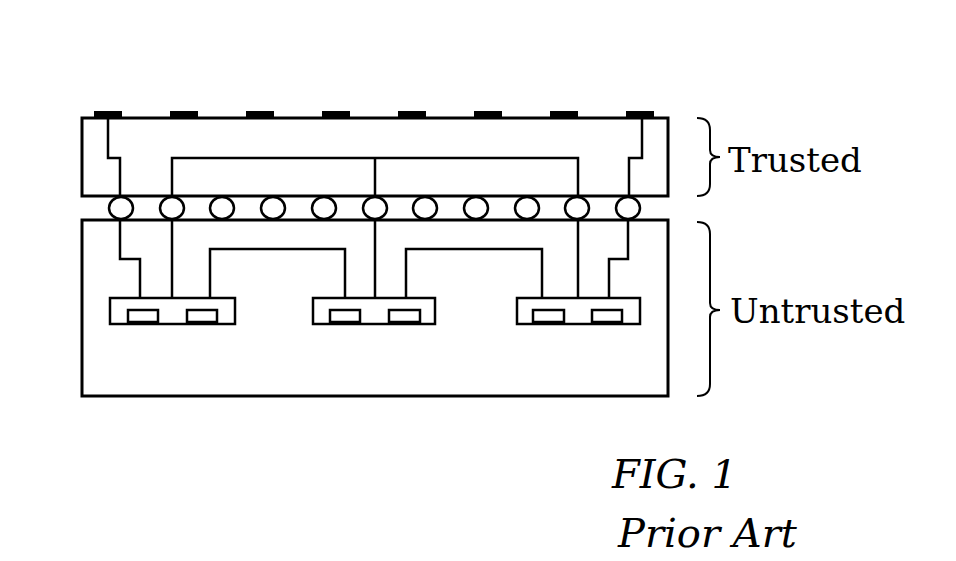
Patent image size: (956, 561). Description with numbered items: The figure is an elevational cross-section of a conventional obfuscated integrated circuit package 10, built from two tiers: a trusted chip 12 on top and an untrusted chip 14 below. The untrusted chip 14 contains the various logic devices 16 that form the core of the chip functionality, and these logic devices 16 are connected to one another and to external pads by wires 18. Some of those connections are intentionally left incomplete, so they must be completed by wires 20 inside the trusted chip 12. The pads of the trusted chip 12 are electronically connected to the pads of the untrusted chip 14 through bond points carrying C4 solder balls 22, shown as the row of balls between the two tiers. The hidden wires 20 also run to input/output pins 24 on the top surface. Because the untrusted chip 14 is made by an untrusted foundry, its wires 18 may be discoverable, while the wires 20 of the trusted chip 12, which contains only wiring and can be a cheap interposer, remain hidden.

The integrated circuit package 10 is at (100, 73).
The trusted chip 12 is at (82, 170).
The untrusted chip 14 is at (252, 396).
The logic devices 16 is at (375, 325).
The wires 18 is at (432, 251).
The wires 20 is at (257, 158).
The C4 solder balls 22 is at (108, 208).
The input/output (I/O) pins 24 is at (322, 110).